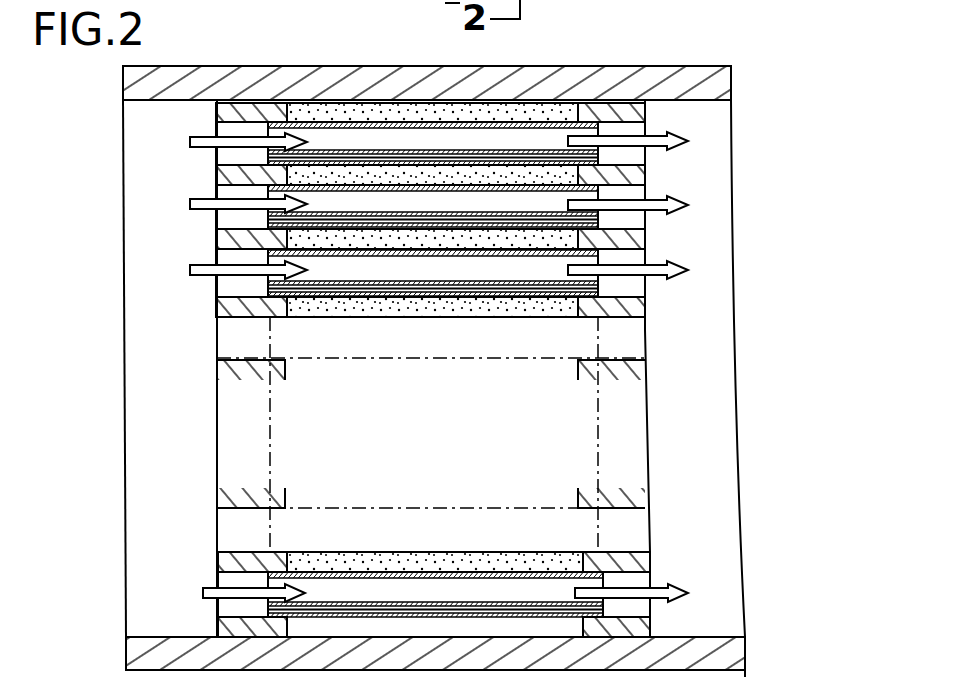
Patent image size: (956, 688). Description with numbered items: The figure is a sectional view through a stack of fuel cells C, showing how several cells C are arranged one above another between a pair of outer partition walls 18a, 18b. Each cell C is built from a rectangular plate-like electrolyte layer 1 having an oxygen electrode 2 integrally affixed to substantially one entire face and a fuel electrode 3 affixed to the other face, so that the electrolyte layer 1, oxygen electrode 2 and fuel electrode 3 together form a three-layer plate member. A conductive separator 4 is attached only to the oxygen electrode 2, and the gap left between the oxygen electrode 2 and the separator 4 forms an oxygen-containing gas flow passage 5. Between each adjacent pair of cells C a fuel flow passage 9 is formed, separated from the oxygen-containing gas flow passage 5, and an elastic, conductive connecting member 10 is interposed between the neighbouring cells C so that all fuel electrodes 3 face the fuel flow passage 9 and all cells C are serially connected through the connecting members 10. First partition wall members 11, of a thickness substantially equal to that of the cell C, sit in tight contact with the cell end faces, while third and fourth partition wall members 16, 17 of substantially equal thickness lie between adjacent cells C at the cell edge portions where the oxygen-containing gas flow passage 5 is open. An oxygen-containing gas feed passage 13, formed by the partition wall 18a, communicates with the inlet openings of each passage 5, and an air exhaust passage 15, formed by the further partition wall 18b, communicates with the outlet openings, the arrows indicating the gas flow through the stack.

The electrolyte layer 1 is at (408, 603).
The oxygen electrode 2 is at (446, 601).
The fuel electrode 3 is at (383, 618).
The conductive separator 4 is at (481, 572).
The oxygen-containing gas flow passage 5 is at (500, 205).
The fuel flow passage 9 is at (363, 172).
The connecting member 10 is at (420, 172).
The first partition wall member 11 is at (640, 128).
The oxygen-containing gas feed passage 13 is at (178, 368).
The air exhaust passage 15 is at (683, 368).
The third partition wall member 16 is at (233, 100).
The fourth partition wall member 17 is at (625, 100).
The partition wall 18a is at (140, 299).
The further partition wall 18b is at (715, 256).
The fuel cell C is at (260, 288).